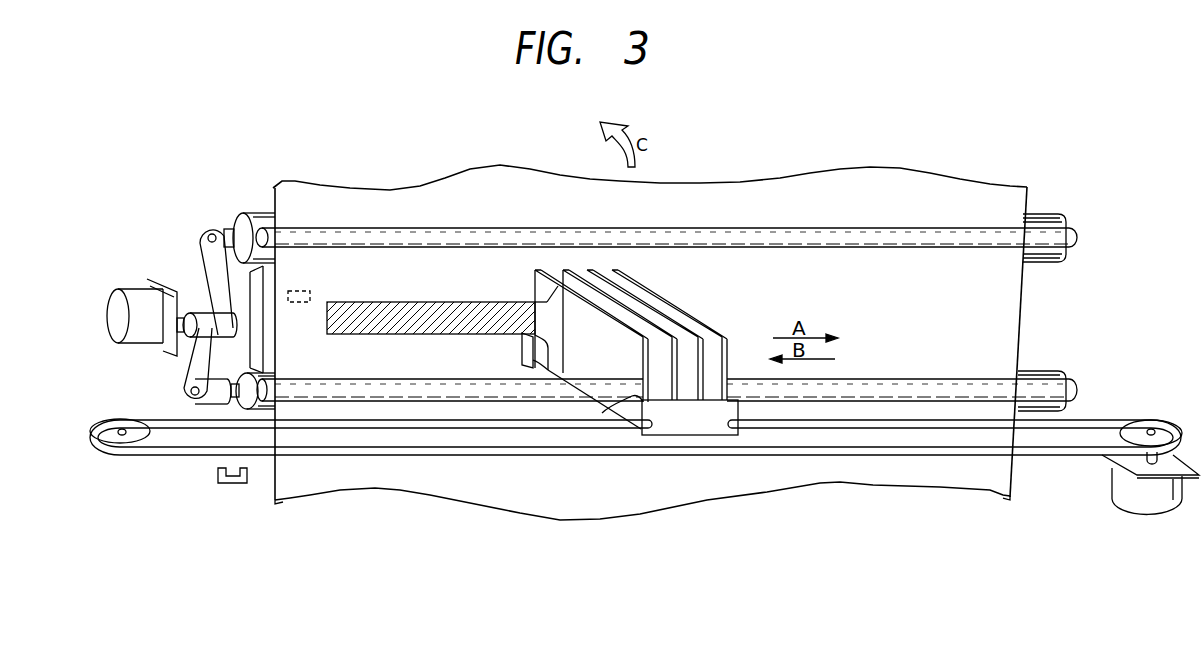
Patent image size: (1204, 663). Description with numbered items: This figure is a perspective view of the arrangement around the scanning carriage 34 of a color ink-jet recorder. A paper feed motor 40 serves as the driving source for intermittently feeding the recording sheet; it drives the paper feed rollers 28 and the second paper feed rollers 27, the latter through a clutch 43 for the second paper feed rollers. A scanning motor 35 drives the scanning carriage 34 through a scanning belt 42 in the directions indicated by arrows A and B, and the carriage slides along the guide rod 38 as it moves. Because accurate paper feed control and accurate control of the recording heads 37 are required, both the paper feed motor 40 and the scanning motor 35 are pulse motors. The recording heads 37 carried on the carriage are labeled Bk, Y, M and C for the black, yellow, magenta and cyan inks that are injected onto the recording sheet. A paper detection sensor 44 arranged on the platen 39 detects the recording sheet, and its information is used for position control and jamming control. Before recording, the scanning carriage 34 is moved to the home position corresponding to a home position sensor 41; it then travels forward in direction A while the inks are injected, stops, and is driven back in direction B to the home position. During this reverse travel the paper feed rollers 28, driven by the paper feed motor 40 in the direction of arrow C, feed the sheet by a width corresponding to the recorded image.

The second paper feed rollers 27 is at (1080, 389).
The paper feed rollers 28 is at (262, 214).
The scanning carriage 34 is at (707, 437).
The scanning motor 35 is at (1140, 512).
The recording heads 37 is at (617, 313).
The upper guide rod 38 is at (1015, 184).
The platen 39 is at (256, 295).
The paper feed motor 40 is at (133, 292).
The home position sensor 41 is at (233, 485).
The scanning belt 42 is at (867, 455).
The clutch for the second paper feed rollers 43 is at (205, 398).
The paper detection sensor 44 is at (312, 296).
The black print head Bk is at (536, 269).
The yellow print head Y is at (567, 268).
The magenta print head M is at (592, 269).
The cyan print head C is at (617, 269).